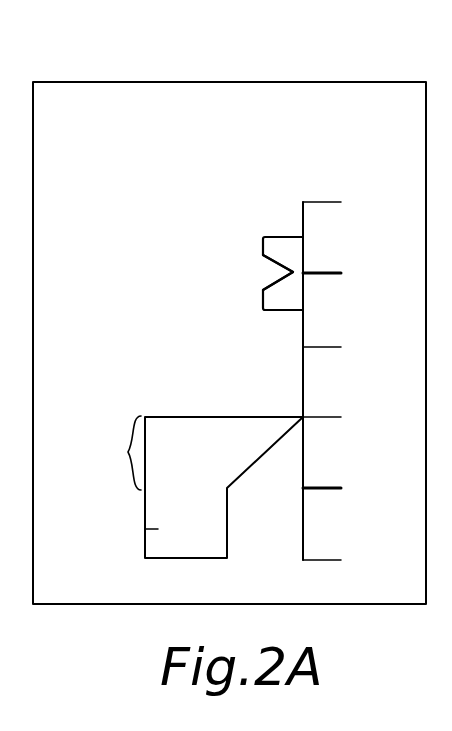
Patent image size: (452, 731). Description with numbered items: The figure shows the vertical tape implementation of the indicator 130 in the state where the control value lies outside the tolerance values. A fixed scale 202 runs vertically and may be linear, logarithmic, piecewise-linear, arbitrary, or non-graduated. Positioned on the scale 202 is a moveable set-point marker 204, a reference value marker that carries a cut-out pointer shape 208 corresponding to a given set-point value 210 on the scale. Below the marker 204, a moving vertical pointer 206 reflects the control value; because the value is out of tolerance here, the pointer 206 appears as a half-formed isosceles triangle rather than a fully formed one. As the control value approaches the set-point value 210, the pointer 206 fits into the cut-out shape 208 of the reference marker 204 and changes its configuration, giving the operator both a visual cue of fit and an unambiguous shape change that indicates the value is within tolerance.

The indicator 130 is at (234, 60).
The fixed scale 202 is at (322, 202).
The moveable set-point marker 204 is at (283, 233).
The moving vertical pointer 206 is at (145, 529).
The cut-out pointer shape 208 is at (278, 283).
The set-point value 210 is at (328, 273).